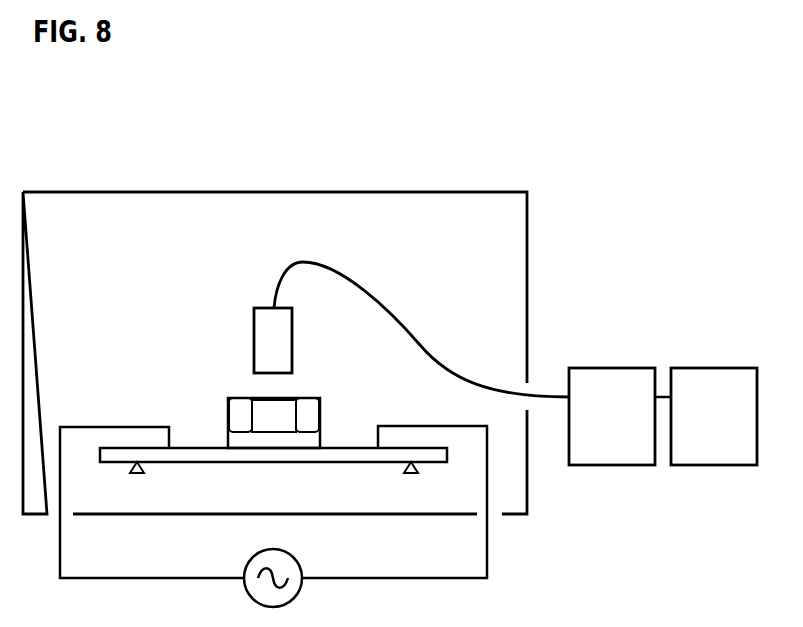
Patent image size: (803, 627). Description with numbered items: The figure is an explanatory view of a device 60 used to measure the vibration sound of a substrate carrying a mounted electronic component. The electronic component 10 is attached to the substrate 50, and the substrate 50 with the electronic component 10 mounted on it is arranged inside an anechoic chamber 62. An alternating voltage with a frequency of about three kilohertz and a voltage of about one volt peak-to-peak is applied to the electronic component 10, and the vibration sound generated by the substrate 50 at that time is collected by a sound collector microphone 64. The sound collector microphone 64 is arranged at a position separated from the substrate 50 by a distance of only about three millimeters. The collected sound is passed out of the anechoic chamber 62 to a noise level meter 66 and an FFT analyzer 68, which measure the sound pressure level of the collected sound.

The device 60 is at (83, 184).
The anechoic chamber 62 is at (528, 232).
The sound collector microphone 64 is at (254, 310).
The noise level meter 66 is at (612, 368).
The FFT analyzer 68 is at (706, 368).
The electronic component 10 is at (213, 383).
The substrate 50 is at (352, 442).